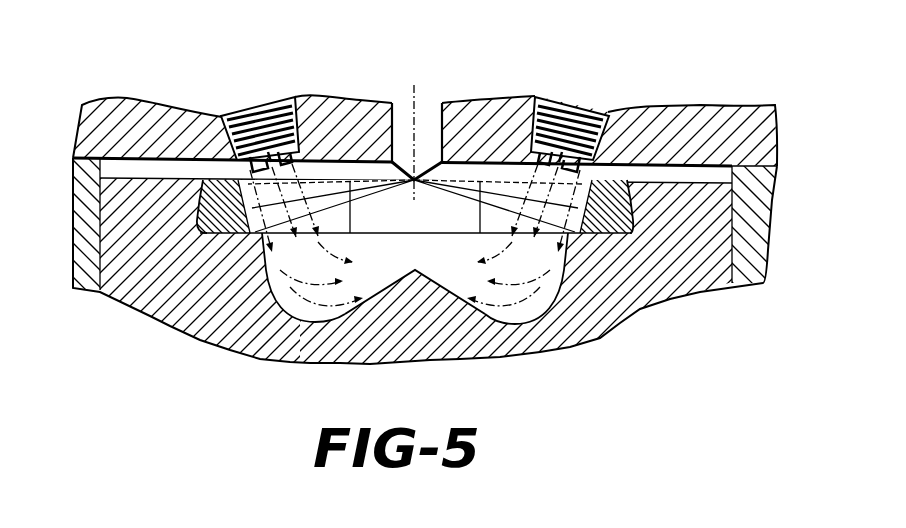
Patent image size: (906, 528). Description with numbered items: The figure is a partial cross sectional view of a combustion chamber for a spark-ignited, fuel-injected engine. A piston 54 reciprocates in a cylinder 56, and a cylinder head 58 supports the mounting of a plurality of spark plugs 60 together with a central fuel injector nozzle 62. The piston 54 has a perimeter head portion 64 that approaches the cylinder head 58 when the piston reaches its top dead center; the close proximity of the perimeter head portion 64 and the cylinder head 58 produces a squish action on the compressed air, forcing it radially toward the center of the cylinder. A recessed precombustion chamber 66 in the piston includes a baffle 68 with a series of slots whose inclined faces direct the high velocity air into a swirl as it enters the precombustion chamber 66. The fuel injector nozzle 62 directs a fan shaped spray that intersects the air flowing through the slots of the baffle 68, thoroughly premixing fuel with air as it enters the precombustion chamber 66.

The piston 54 is at (728, 222).
The cylinder 56 is at (757, 255).
The cylinder head 58 is at (692, 137).
The spark plugs 60 is at (268, 104).
The fuel injector nozzle 62 is at (427, 108).
The perimeter head portion 64 is at (733, 165).
The precombustion chamber 66 is at (408, 264).
The baffle 68 is at (633, 234).